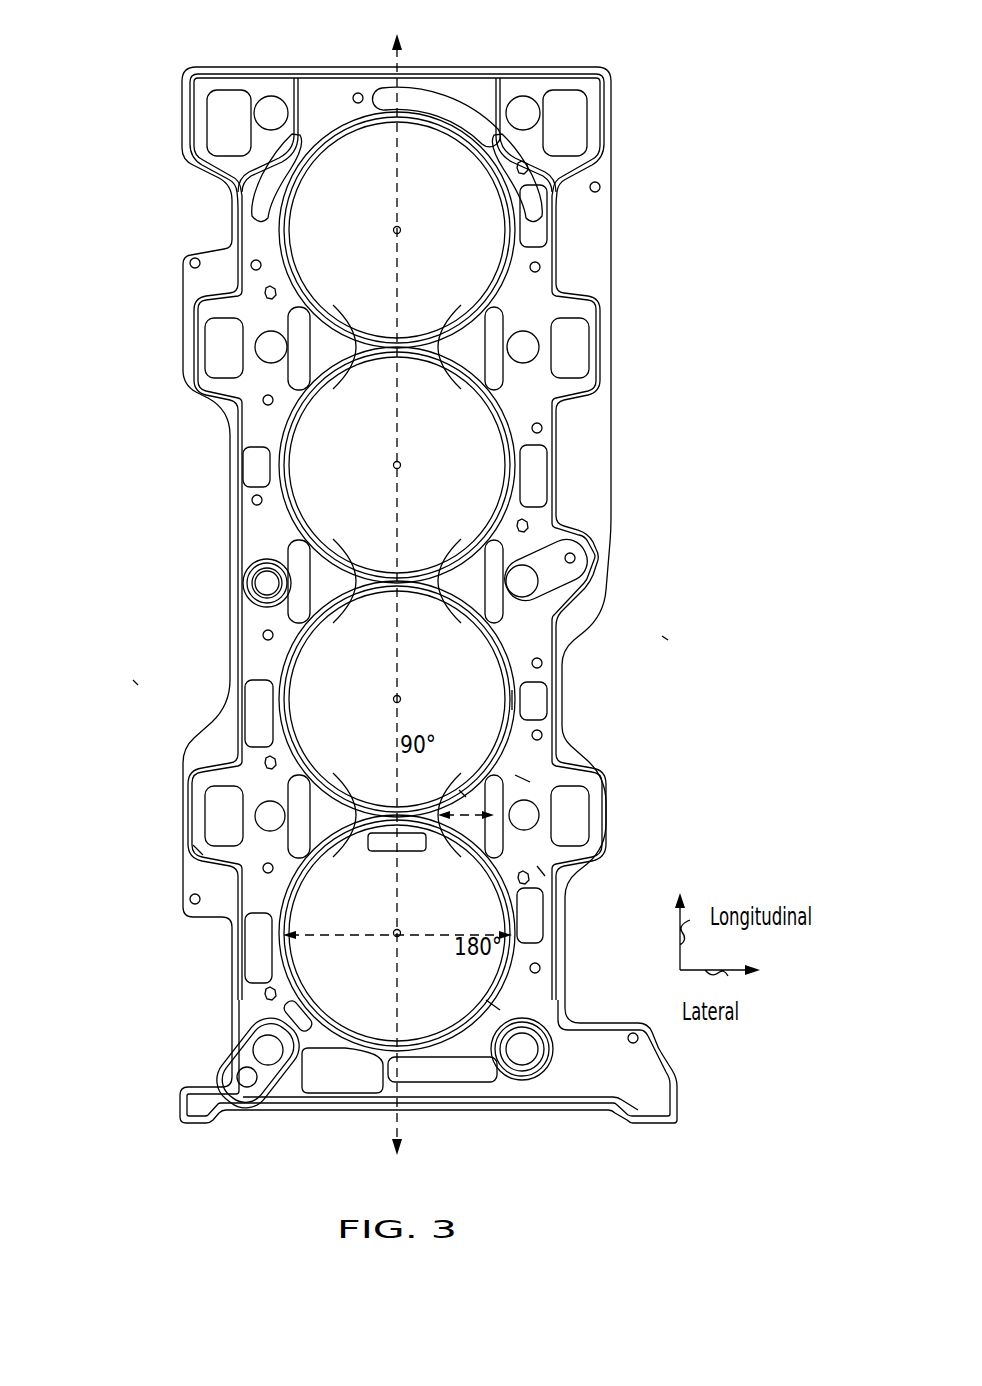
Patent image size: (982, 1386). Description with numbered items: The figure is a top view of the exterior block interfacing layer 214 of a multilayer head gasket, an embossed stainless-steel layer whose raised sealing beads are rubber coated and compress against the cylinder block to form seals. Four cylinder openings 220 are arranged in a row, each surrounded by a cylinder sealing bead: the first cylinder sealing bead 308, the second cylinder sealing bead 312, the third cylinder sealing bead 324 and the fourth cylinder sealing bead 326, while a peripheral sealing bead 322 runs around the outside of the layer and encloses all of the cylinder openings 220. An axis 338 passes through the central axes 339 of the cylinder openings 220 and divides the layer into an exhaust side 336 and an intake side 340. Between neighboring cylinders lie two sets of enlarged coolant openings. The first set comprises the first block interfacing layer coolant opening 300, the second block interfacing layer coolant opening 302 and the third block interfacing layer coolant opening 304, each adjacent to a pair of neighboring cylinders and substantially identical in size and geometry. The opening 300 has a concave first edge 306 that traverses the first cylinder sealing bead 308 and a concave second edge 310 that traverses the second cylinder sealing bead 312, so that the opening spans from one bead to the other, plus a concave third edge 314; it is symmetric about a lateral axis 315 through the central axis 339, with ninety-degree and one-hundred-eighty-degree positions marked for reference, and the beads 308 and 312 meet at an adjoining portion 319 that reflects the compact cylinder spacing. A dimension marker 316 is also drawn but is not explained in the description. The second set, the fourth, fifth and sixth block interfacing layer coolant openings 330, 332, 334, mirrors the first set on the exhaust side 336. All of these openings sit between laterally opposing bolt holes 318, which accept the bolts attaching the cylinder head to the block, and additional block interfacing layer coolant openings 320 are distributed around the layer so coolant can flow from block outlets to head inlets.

The exterior block interfacing layer 214 is at (686, 156).
The cylinder opening 220 is at (316, 245).
The first block interfacing layer coolant opening 300 is at (430, 812).
The second block interfacing layer coolant opening 302 is at (430, 577).
The third block interfacing layer coolant opening 304 is at (430, 342).
The first edge 306 is at (540, 872).
The first cylinder sealing bead 308 is at (480, 1002).
The second edge 310 is at (522, 778).
The second cylinder sealing bead 312 is at (510, 700).
The third edge 314 is at (462, 792).
The axis 315 is at (306, 945).
The bridge width 316 is at (475, 820).
The bolt holes 318 is at (272, 112).
The adjoining portion 319 is at (387, 837).
The block interfacing layer coolant openings 320 is at (427, 96).
The peripheral sealing bead 322 is at (200, 848).
The third cylinder sealing bead 324 is at (476, 378).
The fourth cylinder sealing bead 326 is at (476, 138).
The fourth block interfacing layer coolant opening 330 is at (365, 812).
The fifth block interfacing layer coolant opening 332 is at (365, 577).
The sixth block interfacing layer coolant opening 334 is at (365, 342).
The exhaust side 336 is at (130, 685).
The axis 338 is at (403, 1125).
The central axis 339 is at (399, 233).
The intake side 340 is at (670, 638).